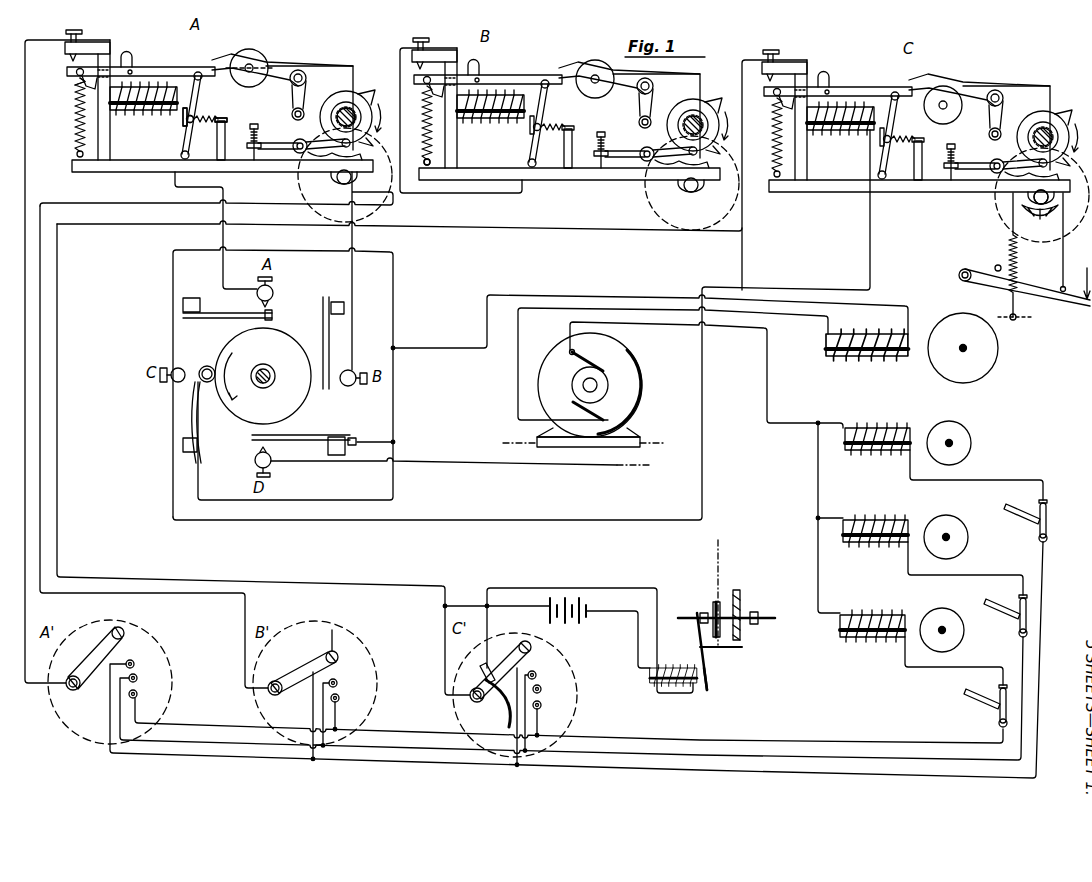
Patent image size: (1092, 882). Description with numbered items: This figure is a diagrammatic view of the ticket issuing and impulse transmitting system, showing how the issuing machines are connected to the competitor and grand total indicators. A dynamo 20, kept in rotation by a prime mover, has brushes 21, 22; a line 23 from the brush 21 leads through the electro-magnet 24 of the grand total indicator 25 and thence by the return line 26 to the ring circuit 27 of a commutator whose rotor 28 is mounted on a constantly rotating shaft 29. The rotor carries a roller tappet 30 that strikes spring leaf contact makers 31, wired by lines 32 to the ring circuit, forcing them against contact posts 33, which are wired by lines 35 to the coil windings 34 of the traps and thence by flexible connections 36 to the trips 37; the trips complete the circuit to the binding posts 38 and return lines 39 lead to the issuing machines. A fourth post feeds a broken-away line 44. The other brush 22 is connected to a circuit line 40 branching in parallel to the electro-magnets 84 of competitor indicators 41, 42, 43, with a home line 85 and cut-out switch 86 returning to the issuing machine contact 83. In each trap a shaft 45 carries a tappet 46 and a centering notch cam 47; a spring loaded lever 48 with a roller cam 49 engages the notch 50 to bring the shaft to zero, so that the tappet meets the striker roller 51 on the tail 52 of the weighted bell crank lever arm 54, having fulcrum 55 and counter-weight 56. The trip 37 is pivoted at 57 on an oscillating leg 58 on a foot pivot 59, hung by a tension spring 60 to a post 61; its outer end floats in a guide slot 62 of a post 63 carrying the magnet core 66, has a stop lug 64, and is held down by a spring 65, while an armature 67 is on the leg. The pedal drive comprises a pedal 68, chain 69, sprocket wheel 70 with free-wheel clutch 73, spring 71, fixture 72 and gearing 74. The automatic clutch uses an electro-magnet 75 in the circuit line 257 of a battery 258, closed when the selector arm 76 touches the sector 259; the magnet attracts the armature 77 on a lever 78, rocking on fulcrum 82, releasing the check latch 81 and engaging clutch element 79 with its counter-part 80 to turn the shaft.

The dynamo 20 is at (642, 379).
The brush 21 is at (604, 415).
The brush 22 is at (590, 361).
The line 23 is at (520, 327).
The electro-magnet 24 is at (866, 340).
The grand total indicator 25 is at (963, 348).
The return line 26 is at (636, 296).
The ring circuit 27 is at (397, 287).
The rotor 28 is at (263, 376).
The shaft 29 is at (267, 369).
The roller tappet 30 is at (206, 366).
The spring leaf contact makers 31 is at (236, 314).
The lines 32 is at (359, 440).
The contact posts 33 is at (276, 302).
The coil winding 34 is at (165, 110).
The lines 35 is at (232, 191).
The flexible connections 36 is at (133, 60).
The trip 37 is at (170, 66).
The binding post 38 is at (66, 57).
The return line 39 is at (28, 152).
The circuit line 40 is at (815, 487).
The competitor indicator 41 is at (949, 443).
The competitor indicator 42 is at (905, 537).
The competitor indicator 43 is at (902, 630).
The line 44 is at (505, 466).
The shaft 45 is at (368, 98).
The tappet 46 is at (352, 92).
The centering notch cam 47 is at (358, 110).
The spring loaded lever 48 is at (272, 145).
The roller cam 49 is at (413, 153).
The notch 50 is at (417, 125).
The striker roller 51 is at (292, 115).
The tail 52 is at (291, 100).
The bell crank lever arm 54 is at (272, 62).
The fulcrum 55 is at (303, 72).
The counter-weight 56 is at (252, 58).
The pivot 57 is at (200, 72).
The oscillating leg 58 is at (215, 104).
The foot pivot 59 is at (207, 123).
The tension spring 60 is at (228, 119).
The post 61 is at (226, 140).
The guide slot 62 is at (80, 78).
The post 63 is at (112, 148).
The lug 64 is at (78, 92).
The spring 65 is at (76, 130).
The core 66 is at (143, 111).
The armature 67 is at (201, 100).
The pedal 68 is at (1044, 291).
The chain 69 is at (1066, 258).
The sprocket wheel 70 is at (1012, 222).
The spring 71 is at (1005, 254).
The fixture 72 is at (1017, 320).
The free-wheel clutch 73 is at (1082, 267).
The gearing 74 is at (1000, 208).
The electro-magnet 75 is at (678, 669).
The selector arm 76 is at (98, 662).
The armature 77 is at (710, 687).
The lever 78 is at (715, 670).
The clutch element 79 is at (716, 606).
The counter-part clutch element 80 is at (742, 606).
The check latch 81 is at (746, 651).
The fulcrum 82 is at (700, 644).
The contact 83 is at (135, 665).
The electro-magnet 84 is at (876, 432).
The home line 85 is at (1008, 480).
The cut-out switch 86 is at (1048, 526).
The circuit line 257 is at (612, 588).
The battery 258 is at (546, 633).
The sector 259 is at (503, 722).